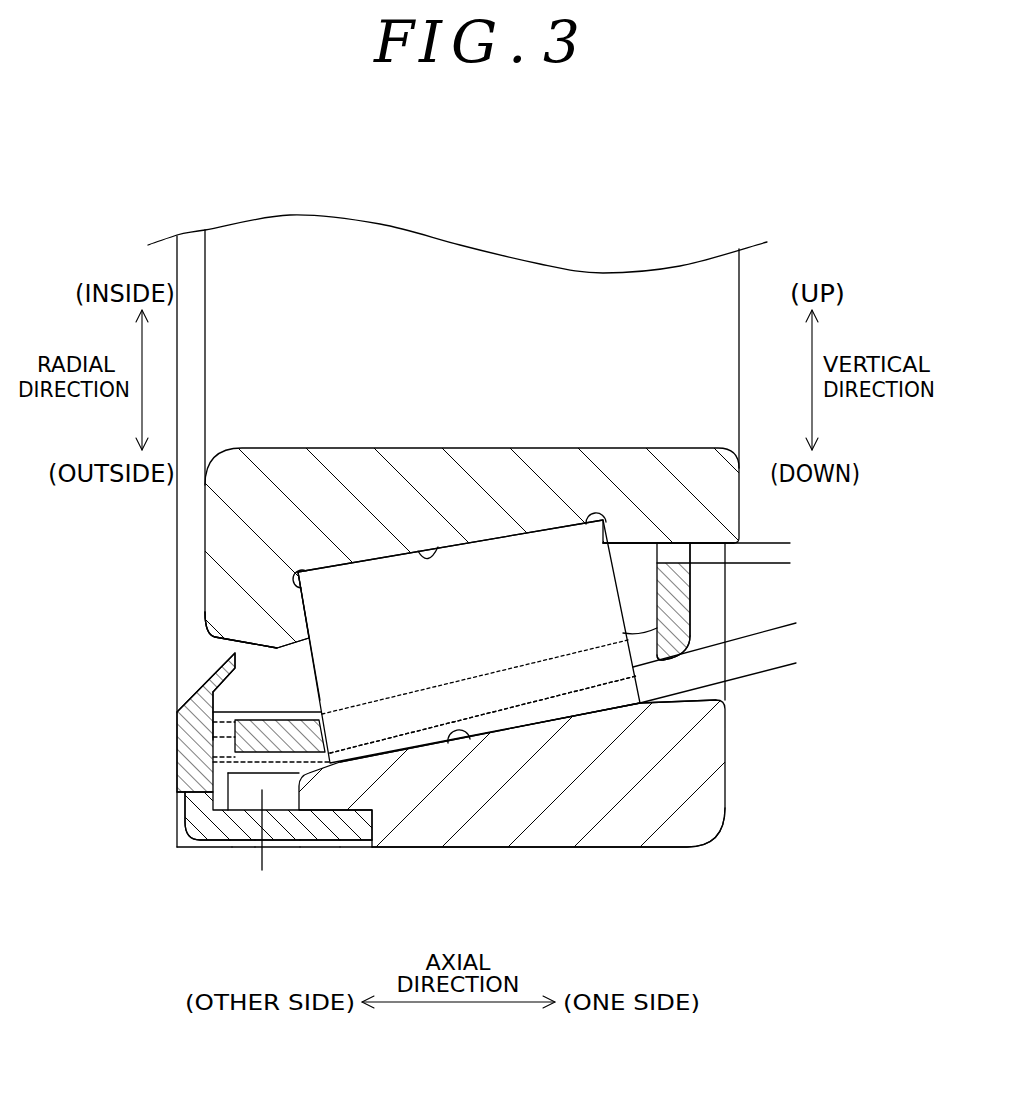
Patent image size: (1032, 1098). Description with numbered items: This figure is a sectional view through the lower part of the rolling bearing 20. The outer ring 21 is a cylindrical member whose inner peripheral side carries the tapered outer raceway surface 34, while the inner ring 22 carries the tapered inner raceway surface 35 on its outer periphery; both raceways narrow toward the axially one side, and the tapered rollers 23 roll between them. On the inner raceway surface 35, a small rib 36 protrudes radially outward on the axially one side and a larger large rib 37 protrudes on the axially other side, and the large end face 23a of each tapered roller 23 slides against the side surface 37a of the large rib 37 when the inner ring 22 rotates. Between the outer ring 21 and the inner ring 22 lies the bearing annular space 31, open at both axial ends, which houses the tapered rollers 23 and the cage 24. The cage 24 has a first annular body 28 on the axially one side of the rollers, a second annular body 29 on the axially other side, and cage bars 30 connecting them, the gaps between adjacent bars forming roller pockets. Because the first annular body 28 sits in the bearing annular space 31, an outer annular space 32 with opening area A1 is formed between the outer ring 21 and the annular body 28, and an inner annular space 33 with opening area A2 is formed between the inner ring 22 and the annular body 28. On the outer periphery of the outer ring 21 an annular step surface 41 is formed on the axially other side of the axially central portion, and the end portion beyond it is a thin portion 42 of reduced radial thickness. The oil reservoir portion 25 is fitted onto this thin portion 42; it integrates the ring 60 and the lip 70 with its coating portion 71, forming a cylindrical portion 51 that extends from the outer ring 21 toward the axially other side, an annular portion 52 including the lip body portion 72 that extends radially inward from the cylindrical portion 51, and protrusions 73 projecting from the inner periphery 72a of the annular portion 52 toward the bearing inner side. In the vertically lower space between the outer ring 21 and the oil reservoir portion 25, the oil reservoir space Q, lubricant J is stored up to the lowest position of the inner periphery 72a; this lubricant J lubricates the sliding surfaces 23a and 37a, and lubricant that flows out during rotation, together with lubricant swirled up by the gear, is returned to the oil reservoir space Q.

The rolling bearing 20 is at (620, 848).
The outer ring 21 is at (546, 818).
The inner ring 22 is at (345, 468).
The tapered rollers 23 is at (490, 550).
The large end face 23a is at (205, 615).
The cage 24 is at (664, 660).
The oil reservoir portion 25 is at (177, 843).
The first annular body 28 is at (690, 581).
The second annular body 29 is at (250, 745).
The cage bars 30 is at (497, 708).
The bearing annular space 31 is at (697, 615).
The outer annular space 32 is at (680, 680).
The inner annular space 33 is at (692, 552).
The outer raceway surface 34 is at (466, 752).
The inner raceway surface 35 is at (421, 547).
The small rib 36 is at (683, 535).
The large rib 37 is at (245, 610).
The side surface 37a is at (300, 608).
The step surface 41 is at (352, 850).
The thin portion 42 is at (370, 810).
The cylindrical portion 51 is at (221, 850).
The annular portion 52 is at (176, 714).
The ring 60 is at (282, 850).
The lip 70 is at (240, 850).
The coating portion 71 is at (318, 850).
The lip body portion 72 is at (185, 745).
The inner periphery 72a is at (195, 700).
The protrusions 73 is at (205, 673).
The lubricant J is at (256, 844).
The oil reservoir space Q is at (274, 711).
The opening area of the outer annular space A1 is at (798, 690).
The opening area of the inner annular space A2 is at (783, 520).